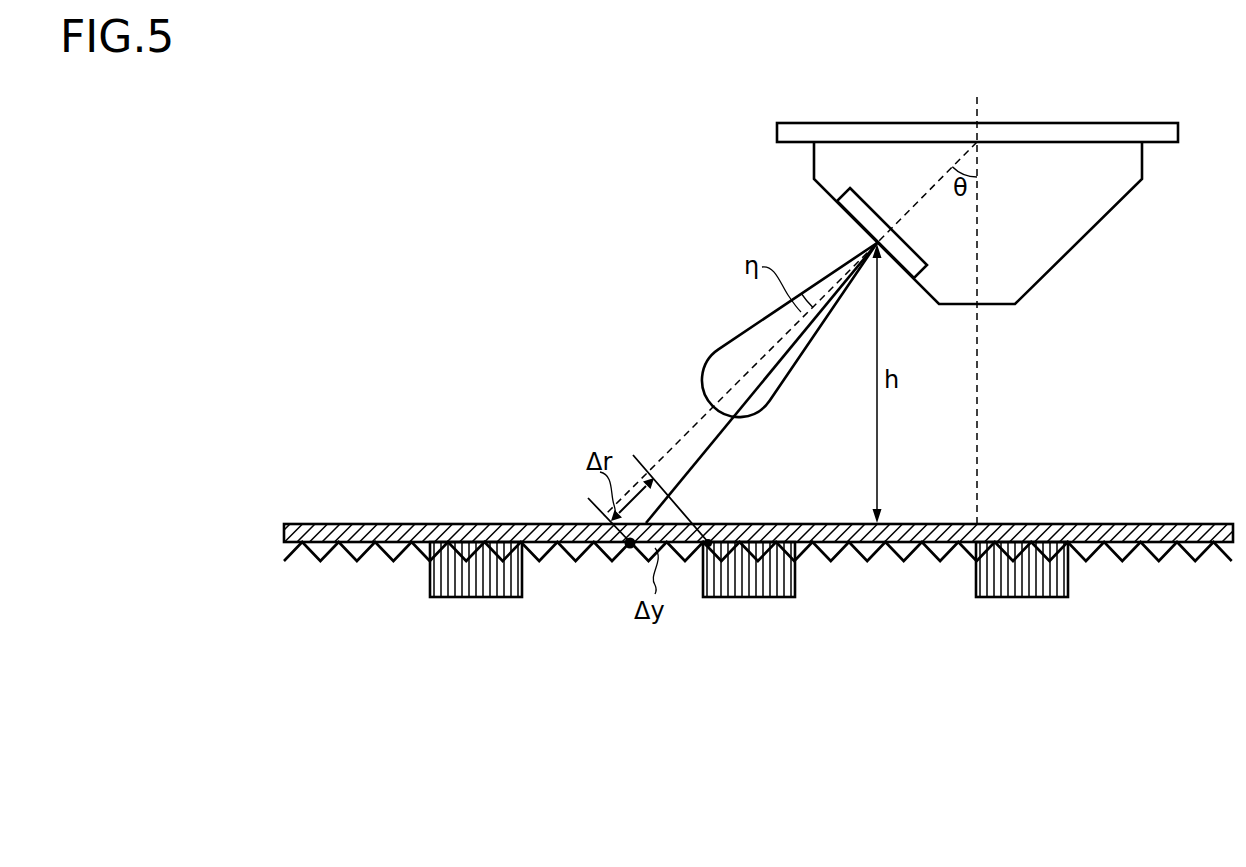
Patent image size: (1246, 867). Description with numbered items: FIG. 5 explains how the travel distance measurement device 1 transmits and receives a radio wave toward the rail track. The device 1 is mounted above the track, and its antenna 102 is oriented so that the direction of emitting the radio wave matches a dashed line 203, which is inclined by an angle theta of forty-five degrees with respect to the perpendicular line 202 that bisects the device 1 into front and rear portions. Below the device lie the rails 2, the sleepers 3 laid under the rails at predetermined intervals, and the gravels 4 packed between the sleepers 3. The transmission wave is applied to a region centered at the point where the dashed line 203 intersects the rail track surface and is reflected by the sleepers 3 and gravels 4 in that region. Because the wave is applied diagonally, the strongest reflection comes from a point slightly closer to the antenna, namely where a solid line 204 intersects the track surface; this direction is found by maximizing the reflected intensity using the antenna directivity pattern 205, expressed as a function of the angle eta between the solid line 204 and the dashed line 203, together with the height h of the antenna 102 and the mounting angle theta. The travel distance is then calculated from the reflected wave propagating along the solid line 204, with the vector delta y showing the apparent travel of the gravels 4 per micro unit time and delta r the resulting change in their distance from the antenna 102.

The travel distance measurement device 1 is at (826, 193).
The antenna 102 is at (862, 226).
The rails 2 is at (325, 524).
The sleepers 3 is at (470, 598).
The gravels (ballast) 4 is at (577, 557).
The perpendicular line 202 is at (978, 408).
The dashed line 203 is at (768, 352).
The solid line 204 is at (801, 333).
The directivity pattern 205 is at (717, 327).